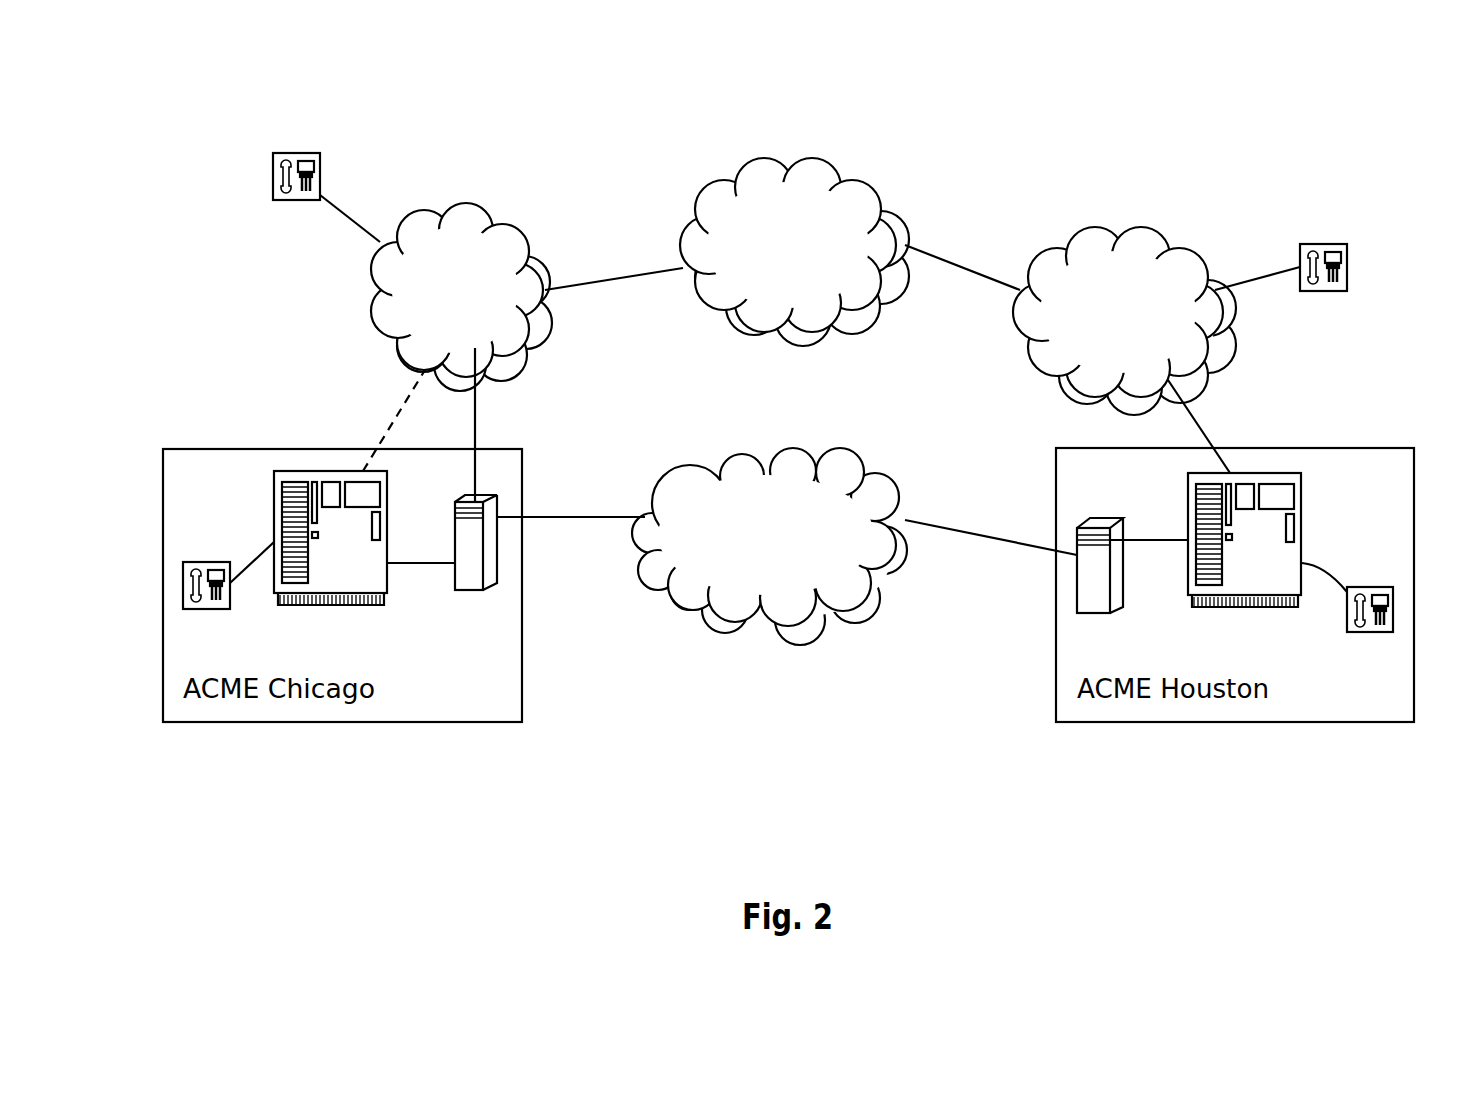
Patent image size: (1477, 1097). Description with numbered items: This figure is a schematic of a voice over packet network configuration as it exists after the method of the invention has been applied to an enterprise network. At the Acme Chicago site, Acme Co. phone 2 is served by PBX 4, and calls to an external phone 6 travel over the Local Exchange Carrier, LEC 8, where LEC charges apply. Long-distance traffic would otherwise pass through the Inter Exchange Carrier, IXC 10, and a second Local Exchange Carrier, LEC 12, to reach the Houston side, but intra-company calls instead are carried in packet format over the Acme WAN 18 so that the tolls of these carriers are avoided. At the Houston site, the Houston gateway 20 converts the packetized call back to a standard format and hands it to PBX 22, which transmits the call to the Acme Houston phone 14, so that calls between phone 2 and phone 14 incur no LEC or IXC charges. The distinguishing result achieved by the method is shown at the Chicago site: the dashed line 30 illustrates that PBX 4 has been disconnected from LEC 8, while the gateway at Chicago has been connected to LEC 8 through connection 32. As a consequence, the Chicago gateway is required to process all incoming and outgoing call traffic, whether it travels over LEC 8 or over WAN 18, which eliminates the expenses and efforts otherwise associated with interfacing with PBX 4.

The Acme Co. phone 2 is at (183, 576).
The PBX 4 is at (300, 471).
The external phone 6 is at (300, 153).
The LEC 8 is at (505, 200).
The IXC 10 is at (865, 160).
The LEC 12 is at (1152, 242).
The Acme Houston phone 14 is at (1303, 244).
The Acme WAN 18 is at (725, 455).
The Houston gateway 20 is at (1077, 540).
The PBX 22 is at (1287, 473).
The dashed line 30 is at (385, 430).
The connection 32 is at (478, 437).